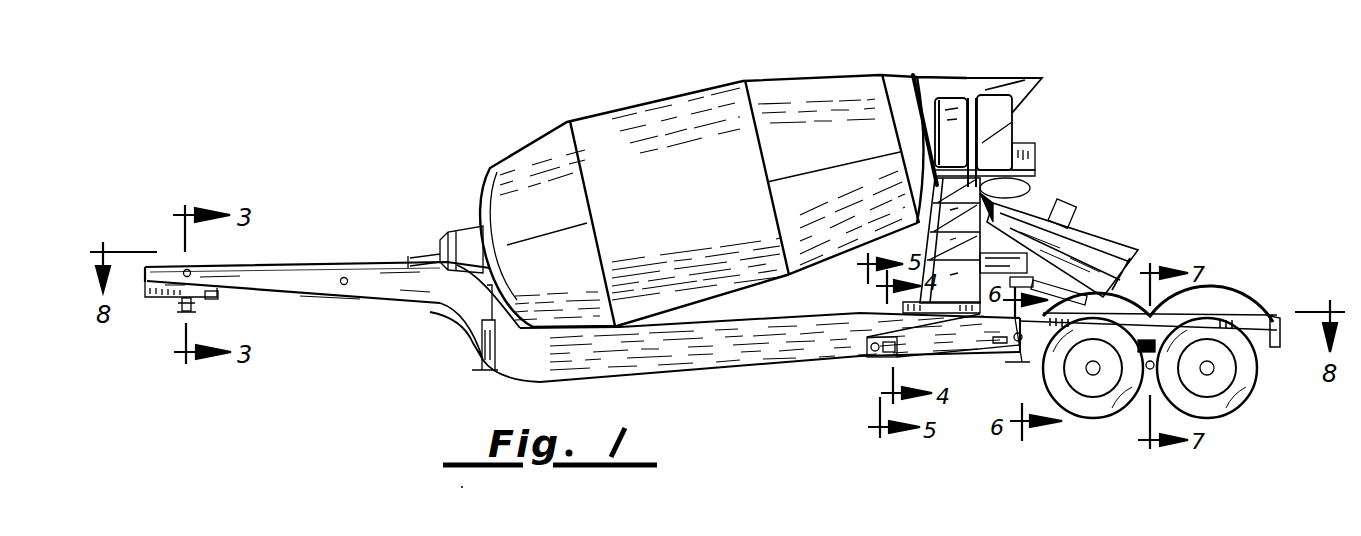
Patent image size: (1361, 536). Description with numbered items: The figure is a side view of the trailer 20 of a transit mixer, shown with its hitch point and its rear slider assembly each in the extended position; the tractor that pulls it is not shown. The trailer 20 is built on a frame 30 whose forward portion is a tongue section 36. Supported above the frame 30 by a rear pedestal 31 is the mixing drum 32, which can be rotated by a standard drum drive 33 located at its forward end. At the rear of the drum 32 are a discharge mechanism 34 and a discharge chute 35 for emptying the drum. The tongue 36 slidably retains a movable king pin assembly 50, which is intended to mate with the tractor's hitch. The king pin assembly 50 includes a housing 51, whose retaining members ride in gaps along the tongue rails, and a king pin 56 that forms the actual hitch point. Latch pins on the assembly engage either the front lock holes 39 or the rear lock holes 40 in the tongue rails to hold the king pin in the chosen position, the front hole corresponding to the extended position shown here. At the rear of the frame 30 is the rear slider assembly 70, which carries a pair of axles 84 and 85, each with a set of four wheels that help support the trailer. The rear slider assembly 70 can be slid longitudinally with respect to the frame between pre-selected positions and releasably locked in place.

The trailer 20 is at (368, 330).
The frame 30 is at (667, 353).
The rear pedestal 31 is at (967, 243).
The mixing drum 32 is at (723, 200).
The drum drive 33 is at (437, 220).
The discharge mechanism 34 is at (1040, 110).
The discharge chute 35 is at (1097, 220).
The tongue section 36 is at (317, 282).
The front lock hole 39 is at (190, 270).
The rear lock hole 40 is at (344, 277).
The king pin assembly 50 is at (158, 314).
The housing 51 is at (215, 300).
The king pin 56 is at (184, 314).
The rear slider assembly 70 is at (983, 372).
The axle 84 is at (1095, 375).
The axle 85 is at (1213, 370).